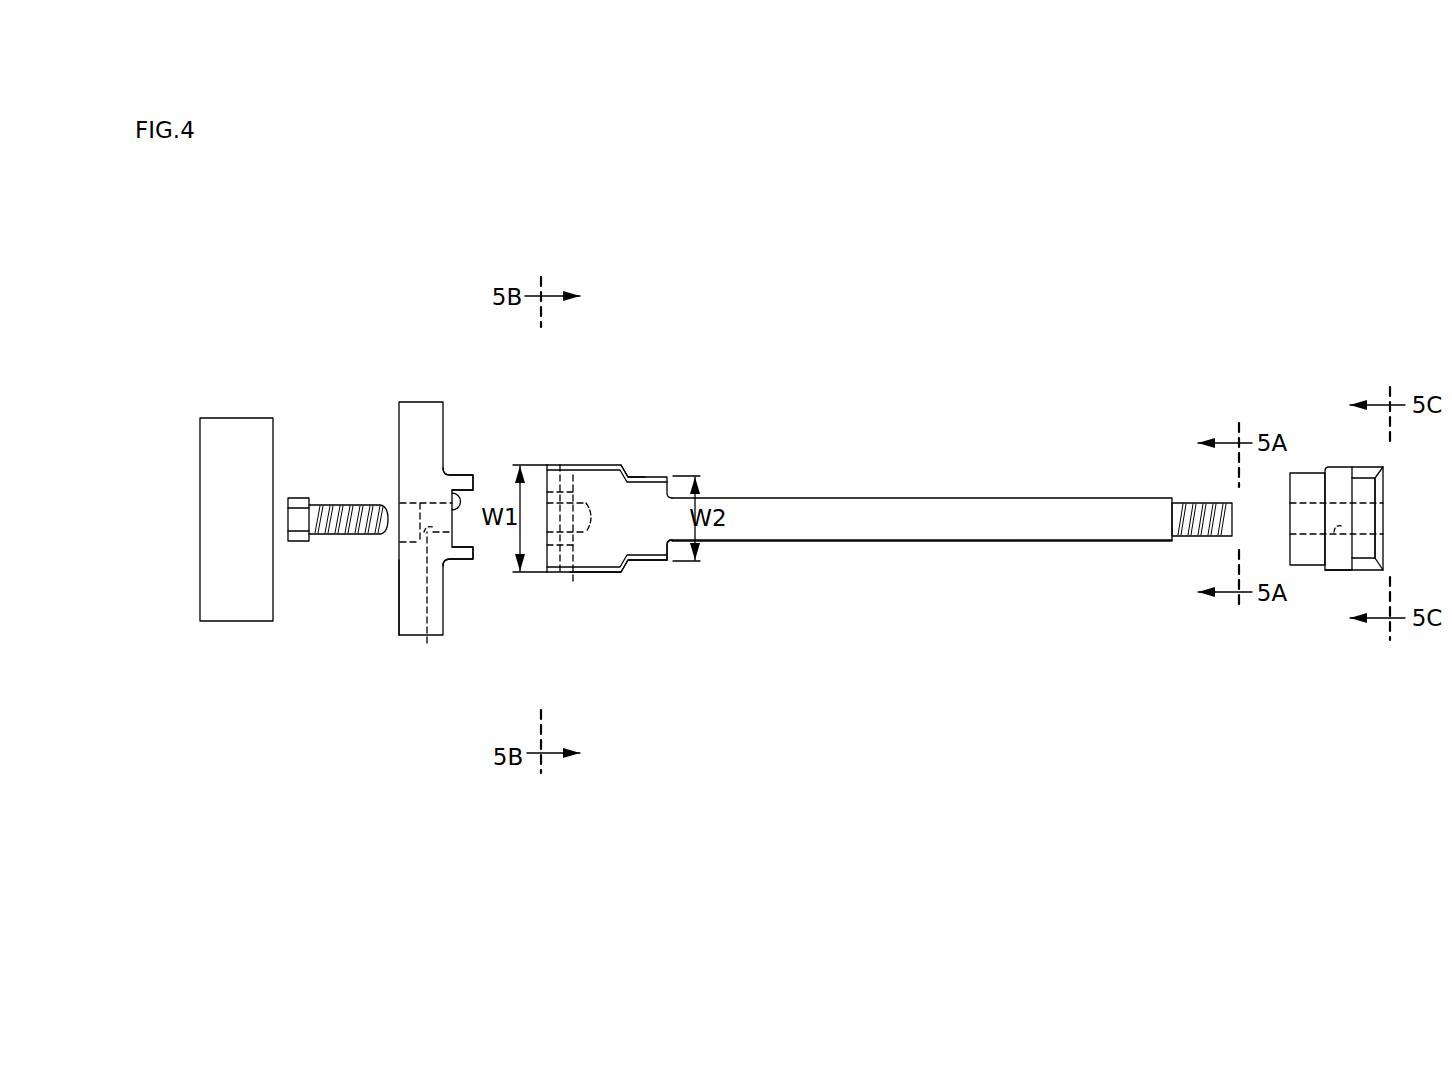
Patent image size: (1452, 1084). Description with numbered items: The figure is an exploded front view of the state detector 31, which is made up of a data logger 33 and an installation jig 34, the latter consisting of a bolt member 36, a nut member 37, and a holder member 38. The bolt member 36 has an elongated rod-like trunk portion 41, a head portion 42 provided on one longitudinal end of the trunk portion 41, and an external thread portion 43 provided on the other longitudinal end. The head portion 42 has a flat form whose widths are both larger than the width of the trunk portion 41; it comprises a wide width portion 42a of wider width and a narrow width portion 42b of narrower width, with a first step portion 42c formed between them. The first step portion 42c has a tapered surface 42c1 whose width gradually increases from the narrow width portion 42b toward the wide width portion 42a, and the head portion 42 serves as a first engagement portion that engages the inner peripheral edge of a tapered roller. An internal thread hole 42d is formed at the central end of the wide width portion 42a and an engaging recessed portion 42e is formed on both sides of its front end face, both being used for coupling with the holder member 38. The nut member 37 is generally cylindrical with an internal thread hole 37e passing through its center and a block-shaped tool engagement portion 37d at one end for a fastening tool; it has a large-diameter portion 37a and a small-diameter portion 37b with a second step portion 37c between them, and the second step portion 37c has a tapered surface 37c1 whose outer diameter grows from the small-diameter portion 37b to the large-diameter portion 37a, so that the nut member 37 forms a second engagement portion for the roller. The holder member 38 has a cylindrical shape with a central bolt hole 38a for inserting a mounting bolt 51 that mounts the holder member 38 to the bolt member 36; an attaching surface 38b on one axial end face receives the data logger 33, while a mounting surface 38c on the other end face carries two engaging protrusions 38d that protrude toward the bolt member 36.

The state detector 31 is at (474, 266).
The data logger 33 is at (237, 418).
The installation jig 34 is at (810, 392).
The bolt member 36 is at (668, 443).
The nut member 37 is at (1315, 394).
The large-diameter portion 37a is at (1345, 466).
The small-diameter portion 37b is at (1305, 472).
The second step portion 37c is at (1323, 466).
The tapered surface 37c1 is at (1325, 571).
The tool engagement portion 37d is at (1378, 550).
The internal thread hole 37e is at (1342, 527).
The holder member 38 is at (404, 378).
The bolt hole 38a is at (427, 602).
The attaching surface 38b is at (399, 592).
The mounting surface 38c is at (452, 496).
The engaging protrusions 38d is at (468, 473).
The trunk portion 41 is at (886, 542).
The head portion 42 is at (599, 451).
The wide width portion 42a is at (586, 573).
The narrow width portion 42b is at (665, 563).
The first step portion 42c is at (633, 562).
The tapered surface 42c1 is at (627, 471).
The internal thread hole 42d is at (575, 585).
The engaging recessed portion 42e is at (560, 572).
The external thread portion 43 is at (1200, 502).
The mounting bolt 51 is at (299, 498).